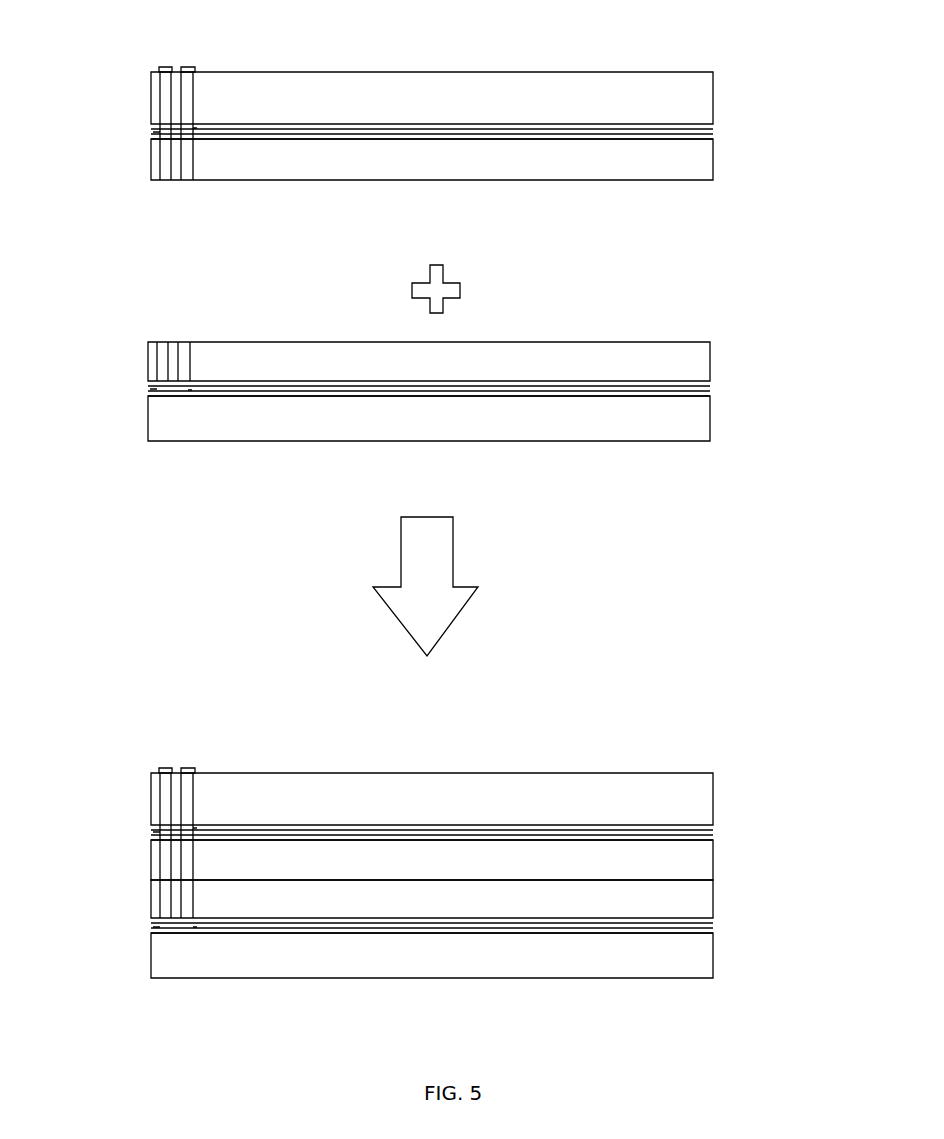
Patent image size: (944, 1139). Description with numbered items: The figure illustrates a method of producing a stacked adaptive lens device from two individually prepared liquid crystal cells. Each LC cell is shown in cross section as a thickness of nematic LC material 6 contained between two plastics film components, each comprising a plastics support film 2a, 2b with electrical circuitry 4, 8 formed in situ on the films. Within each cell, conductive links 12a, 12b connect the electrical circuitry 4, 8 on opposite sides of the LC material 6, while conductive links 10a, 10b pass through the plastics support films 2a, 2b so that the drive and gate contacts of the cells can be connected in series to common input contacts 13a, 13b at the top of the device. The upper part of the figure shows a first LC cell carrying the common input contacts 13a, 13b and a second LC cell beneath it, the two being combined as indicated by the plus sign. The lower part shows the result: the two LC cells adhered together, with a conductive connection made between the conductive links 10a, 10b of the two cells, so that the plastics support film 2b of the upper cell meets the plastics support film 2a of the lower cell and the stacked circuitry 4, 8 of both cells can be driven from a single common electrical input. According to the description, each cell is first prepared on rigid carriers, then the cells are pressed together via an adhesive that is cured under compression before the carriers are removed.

The plastics support film 2a is at (697, 98).
The plastics support film 2b is at (700, 159).
The electrical circuitry 4 is at (710, 127).
The nematic LC material 6 is at (712, 133).
The electrical circuitry 8 is at (712, 140).
The conductive link 10a is at (165, 97).
The conductive link 10b is at (189, 94).
The conductive link 12a is at (153, 132).
The conductive link 12b is at (195, 128).
The common input contact 13a is at (166, 67).
The common input contact 13b is at (192, 67).